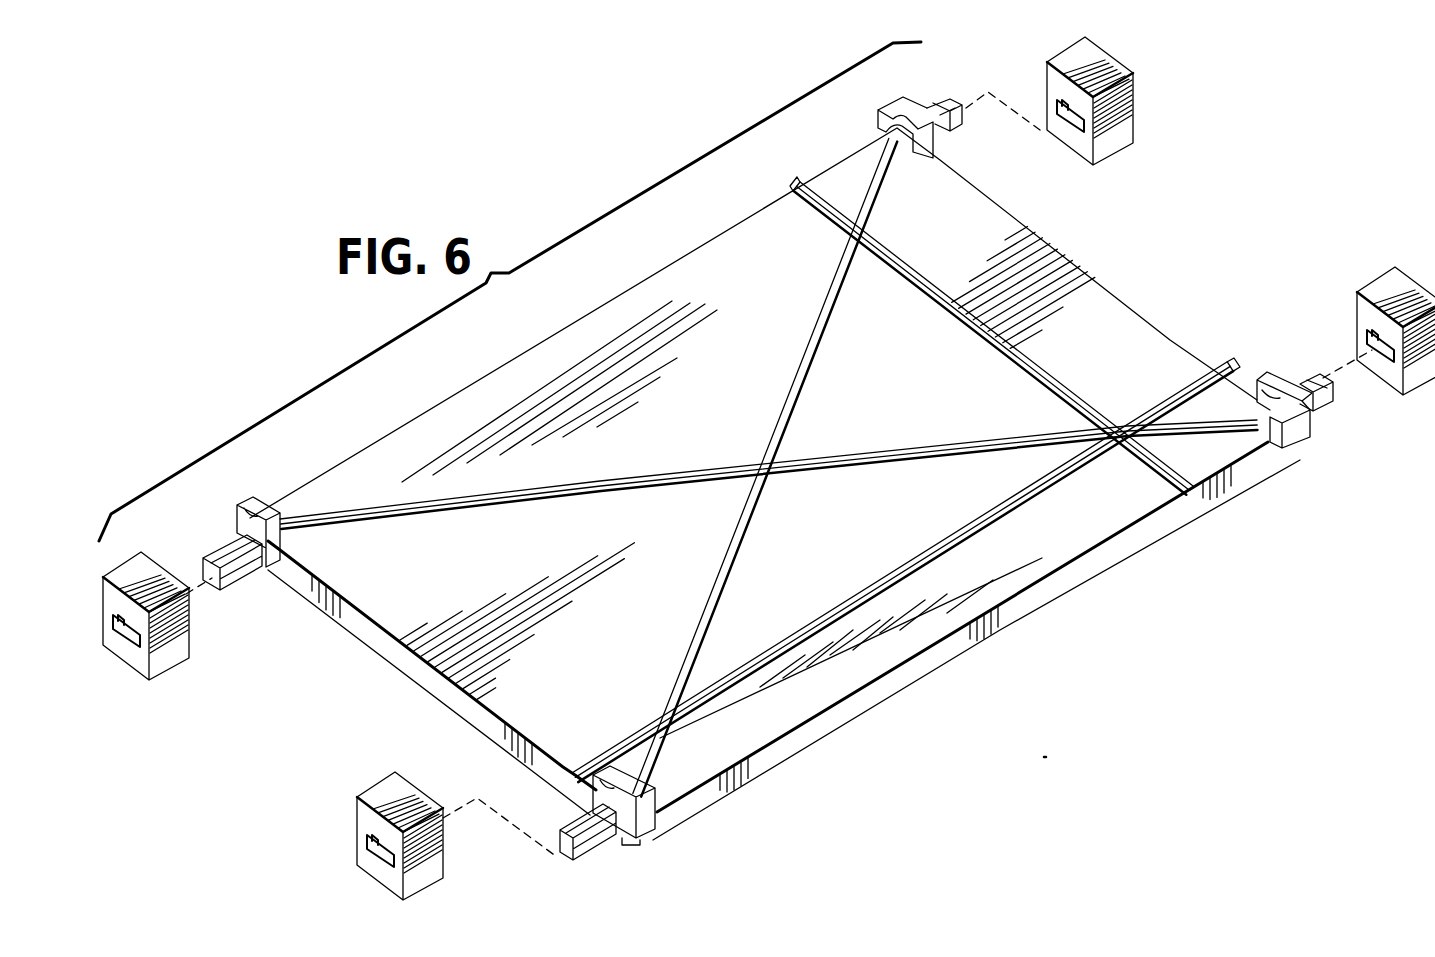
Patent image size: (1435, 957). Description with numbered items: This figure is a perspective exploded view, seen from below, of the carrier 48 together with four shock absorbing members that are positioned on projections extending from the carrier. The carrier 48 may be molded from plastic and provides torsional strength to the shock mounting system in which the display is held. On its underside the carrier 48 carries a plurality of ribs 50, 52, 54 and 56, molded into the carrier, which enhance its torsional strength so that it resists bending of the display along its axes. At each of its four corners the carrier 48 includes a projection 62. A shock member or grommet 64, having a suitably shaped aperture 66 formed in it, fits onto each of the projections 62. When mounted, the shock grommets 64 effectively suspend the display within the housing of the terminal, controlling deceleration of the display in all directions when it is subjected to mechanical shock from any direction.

The carrier 48 is at (862, 707).
The rib 50 is at (790, 378).
The rib 52 is at (865, 452).
The rib 54 is at (980, 325).
The rib 56 is at (882, 573).
The projection 62 is at (946, 108).
The shock grommet 64 is at (1123, 123).
The aperture 66 is at (1073, 127).